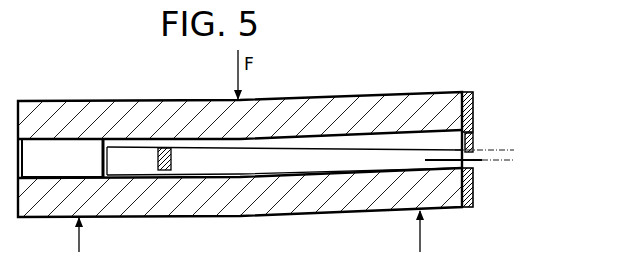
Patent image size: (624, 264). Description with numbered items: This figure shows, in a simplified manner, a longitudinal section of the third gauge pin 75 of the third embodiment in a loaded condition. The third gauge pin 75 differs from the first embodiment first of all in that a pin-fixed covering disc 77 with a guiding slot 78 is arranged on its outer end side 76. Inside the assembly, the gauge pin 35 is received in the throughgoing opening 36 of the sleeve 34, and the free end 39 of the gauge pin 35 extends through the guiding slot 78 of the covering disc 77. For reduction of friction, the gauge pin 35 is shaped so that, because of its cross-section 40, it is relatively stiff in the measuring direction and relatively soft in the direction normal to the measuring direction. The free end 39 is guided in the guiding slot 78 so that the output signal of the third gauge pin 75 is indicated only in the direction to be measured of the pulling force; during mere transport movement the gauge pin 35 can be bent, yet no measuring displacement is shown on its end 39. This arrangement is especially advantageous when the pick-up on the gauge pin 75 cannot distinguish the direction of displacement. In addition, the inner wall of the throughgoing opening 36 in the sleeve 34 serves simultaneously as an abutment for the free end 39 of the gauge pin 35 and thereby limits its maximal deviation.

The sleeve 34 is at (113, 118).
The gauge pin 35 is at (312, 176).
The throughgoing opening 36 is at (380, 138).
The free end 39 is at (480, 163).
The cross-section 40 is at (172, 172).
The third gauge pin 75 is at (300, 86).
The outer end side 76 is at (478, 198).
The covering disc 77 is at (474, 95).
The guiding slot 78 is at (474, 141).